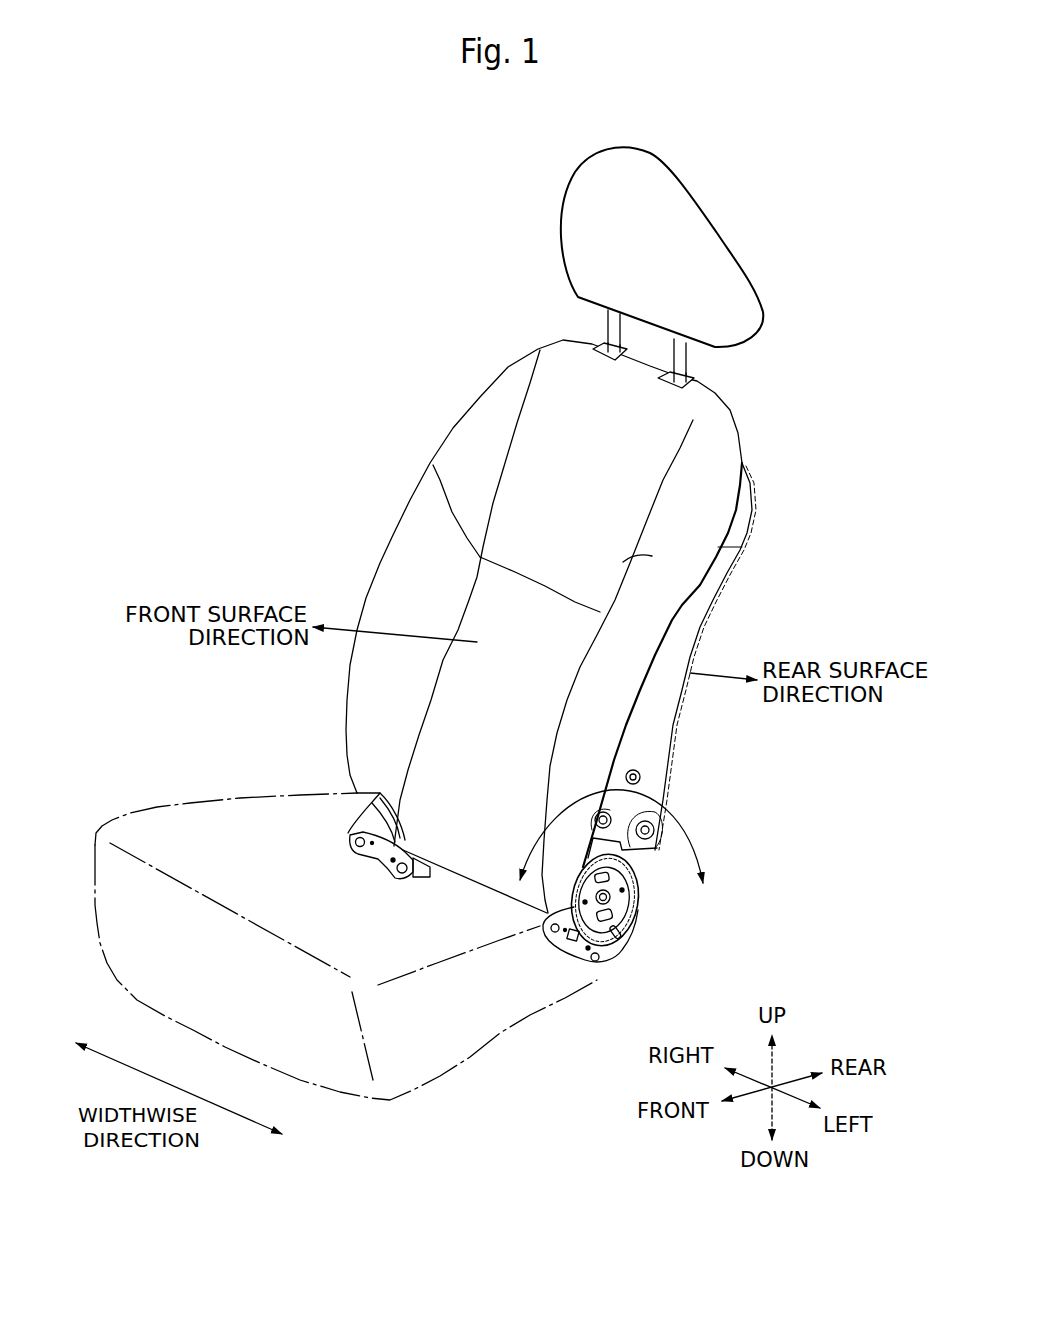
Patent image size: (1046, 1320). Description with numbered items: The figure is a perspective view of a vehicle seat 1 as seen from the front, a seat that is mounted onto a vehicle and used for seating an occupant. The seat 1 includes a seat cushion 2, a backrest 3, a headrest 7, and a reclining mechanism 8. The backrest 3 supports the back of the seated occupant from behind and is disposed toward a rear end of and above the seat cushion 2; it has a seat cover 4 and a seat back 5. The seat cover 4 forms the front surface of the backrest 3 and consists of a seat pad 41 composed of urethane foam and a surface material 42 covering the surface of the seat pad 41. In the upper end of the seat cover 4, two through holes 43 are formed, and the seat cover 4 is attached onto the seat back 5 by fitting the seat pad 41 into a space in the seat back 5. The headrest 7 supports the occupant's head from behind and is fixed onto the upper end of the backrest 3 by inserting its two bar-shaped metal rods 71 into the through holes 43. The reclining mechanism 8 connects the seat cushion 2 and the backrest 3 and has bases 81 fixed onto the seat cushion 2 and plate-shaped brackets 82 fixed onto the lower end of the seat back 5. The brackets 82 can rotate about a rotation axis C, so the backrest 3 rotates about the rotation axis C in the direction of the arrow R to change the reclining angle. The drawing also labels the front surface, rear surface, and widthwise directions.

The vehicle seat 1 is at (418, 193).
The seat cushion 2 is at (160, 805).
The backrest 3 is at (508, 368).
The seat cover 4 is at (380, 558).
The seat pad 41 is at (540, 482).
The surface material 42 is at (457, 463).
The through holes 43 is at (600, 343).
The seat back 5 is at (753, 483).
The headrest 7 is at (580, 167).
The rods 71 is at (613, 326).
The reclining mechanism 8 is at (628, 960).
The bases 81 is at (610, 947).
The brackets 82 is at (628, 853).
The rotation axis C is at (613, 900).
The arrow R is at (697, 823).